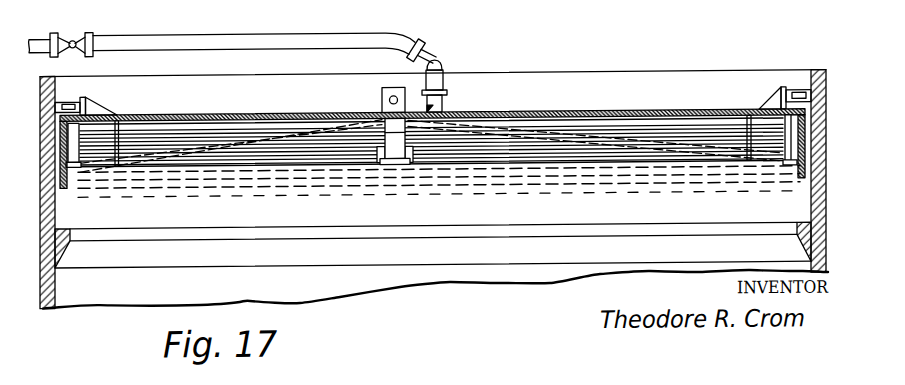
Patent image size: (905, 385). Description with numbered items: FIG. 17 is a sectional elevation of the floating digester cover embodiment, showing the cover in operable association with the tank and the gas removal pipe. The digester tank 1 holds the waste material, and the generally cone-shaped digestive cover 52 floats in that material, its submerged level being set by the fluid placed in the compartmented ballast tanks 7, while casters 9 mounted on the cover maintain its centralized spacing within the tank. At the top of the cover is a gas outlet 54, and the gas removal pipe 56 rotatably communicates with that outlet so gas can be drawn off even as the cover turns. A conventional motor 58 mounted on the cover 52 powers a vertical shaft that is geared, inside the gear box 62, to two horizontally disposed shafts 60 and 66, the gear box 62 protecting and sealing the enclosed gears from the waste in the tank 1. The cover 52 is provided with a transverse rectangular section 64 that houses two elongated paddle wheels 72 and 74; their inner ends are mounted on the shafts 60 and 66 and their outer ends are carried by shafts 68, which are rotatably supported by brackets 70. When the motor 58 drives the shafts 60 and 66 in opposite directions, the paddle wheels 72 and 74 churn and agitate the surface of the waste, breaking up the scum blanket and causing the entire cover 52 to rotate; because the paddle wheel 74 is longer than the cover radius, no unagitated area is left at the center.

The digester tank 1 is at (661, 88).
The compartmented ballast tanks 7 is at (118, 124).
The casters 9 is at (433, 175).
The digestive cover 52 is at (607, 113).
The gas outlet 54 is at (440, 109).
The gas removal pipe 56 is at (236, 44).
The motor 58 is at (391, 92).
The horizontal shaft 60 is at (383, 152).
The gear box 62 is at (390, 134).
The transverse rectangular section 64 is at (527, 117).
The horizontal shaft 66 is at (410, 155).
The outer shafts 68 is at (80, 153).
The brackets 70 is at (69, 170).
The paddle wheel 72 is at (297, 175).
The paddle wheel 74 is at (504, 173).